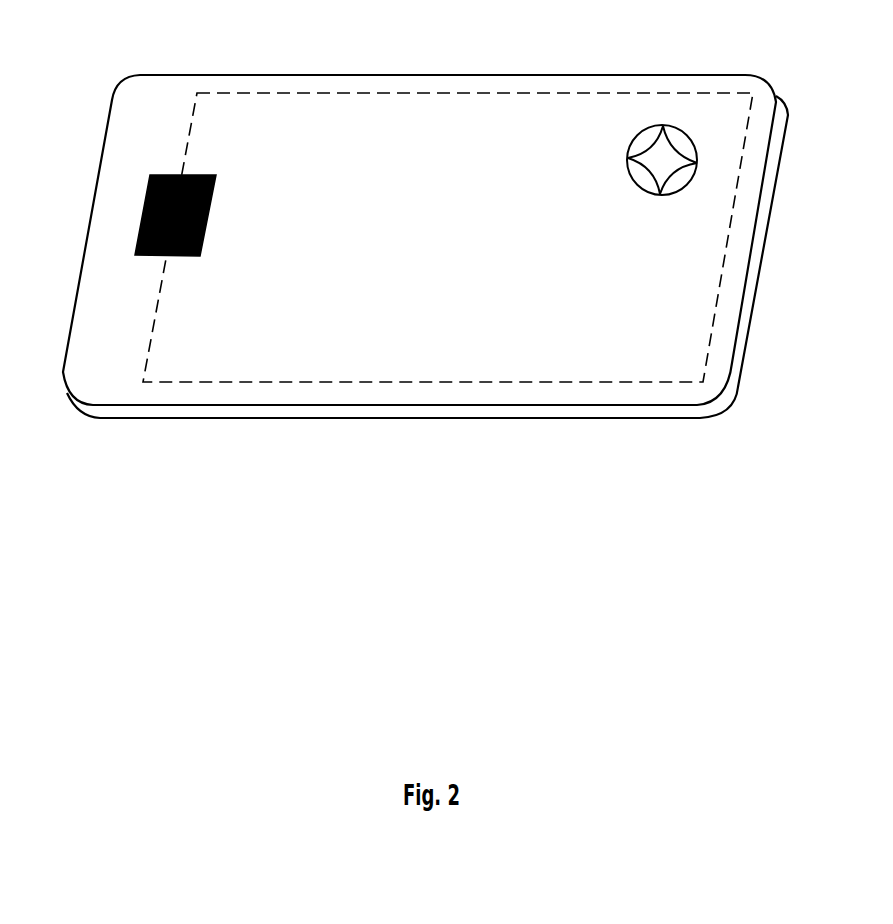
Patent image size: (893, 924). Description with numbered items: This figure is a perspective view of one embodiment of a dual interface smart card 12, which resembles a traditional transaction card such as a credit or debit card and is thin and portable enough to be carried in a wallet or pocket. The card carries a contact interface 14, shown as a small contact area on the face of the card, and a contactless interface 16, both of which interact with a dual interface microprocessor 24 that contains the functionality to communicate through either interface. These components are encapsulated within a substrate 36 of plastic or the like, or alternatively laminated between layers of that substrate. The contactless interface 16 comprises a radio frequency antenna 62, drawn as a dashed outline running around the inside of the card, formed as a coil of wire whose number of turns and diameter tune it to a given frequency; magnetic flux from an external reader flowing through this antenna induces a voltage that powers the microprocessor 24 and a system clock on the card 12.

The dual interface smart card 12 is at (657, 62).
The contact interface 14 is at (173, 203).
The contactless interface 16 is at (105, 344).
The dual interface microprocessor 24 is at (118, 256).
The substrate 36 is at (665, 335).
The radio frequency antenna 62 is at (295, 382).